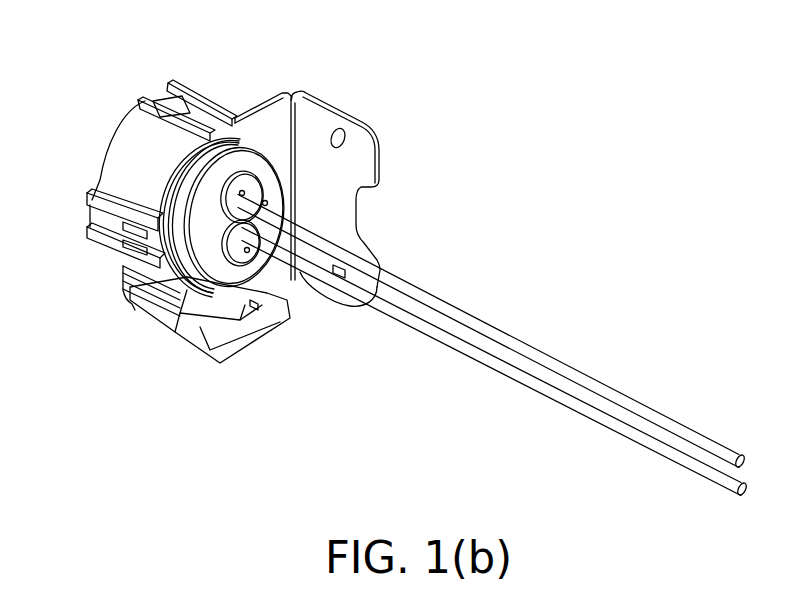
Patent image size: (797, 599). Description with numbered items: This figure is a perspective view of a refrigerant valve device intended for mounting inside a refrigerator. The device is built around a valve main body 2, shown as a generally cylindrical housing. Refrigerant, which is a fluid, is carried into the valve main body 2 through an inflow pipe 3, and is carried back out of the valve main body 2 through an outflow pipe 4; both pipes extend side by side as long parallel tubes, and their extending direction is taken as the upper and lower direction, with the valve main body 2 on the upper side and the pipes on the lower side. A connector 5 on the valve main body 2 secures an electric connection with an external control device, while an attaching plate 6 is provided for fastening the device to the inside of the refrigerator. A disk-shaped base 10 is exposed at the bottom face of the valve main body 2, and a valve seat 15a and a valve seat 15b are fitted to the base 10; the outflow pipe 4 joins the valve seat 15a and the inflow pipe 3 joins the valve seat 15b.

The valve main body 2 is at (118, 160).
The inflow pipe 3 is at (513, 370).
The outflow pipe 4 is at (527, 345).
The connector 5 is at (238, 332).
The attaching plate 6 is at (355, 170).
The base 10 is at (203, 235).
The valve seat 15a is at (255, 183).
The valve seat 15b is at (262, 227).